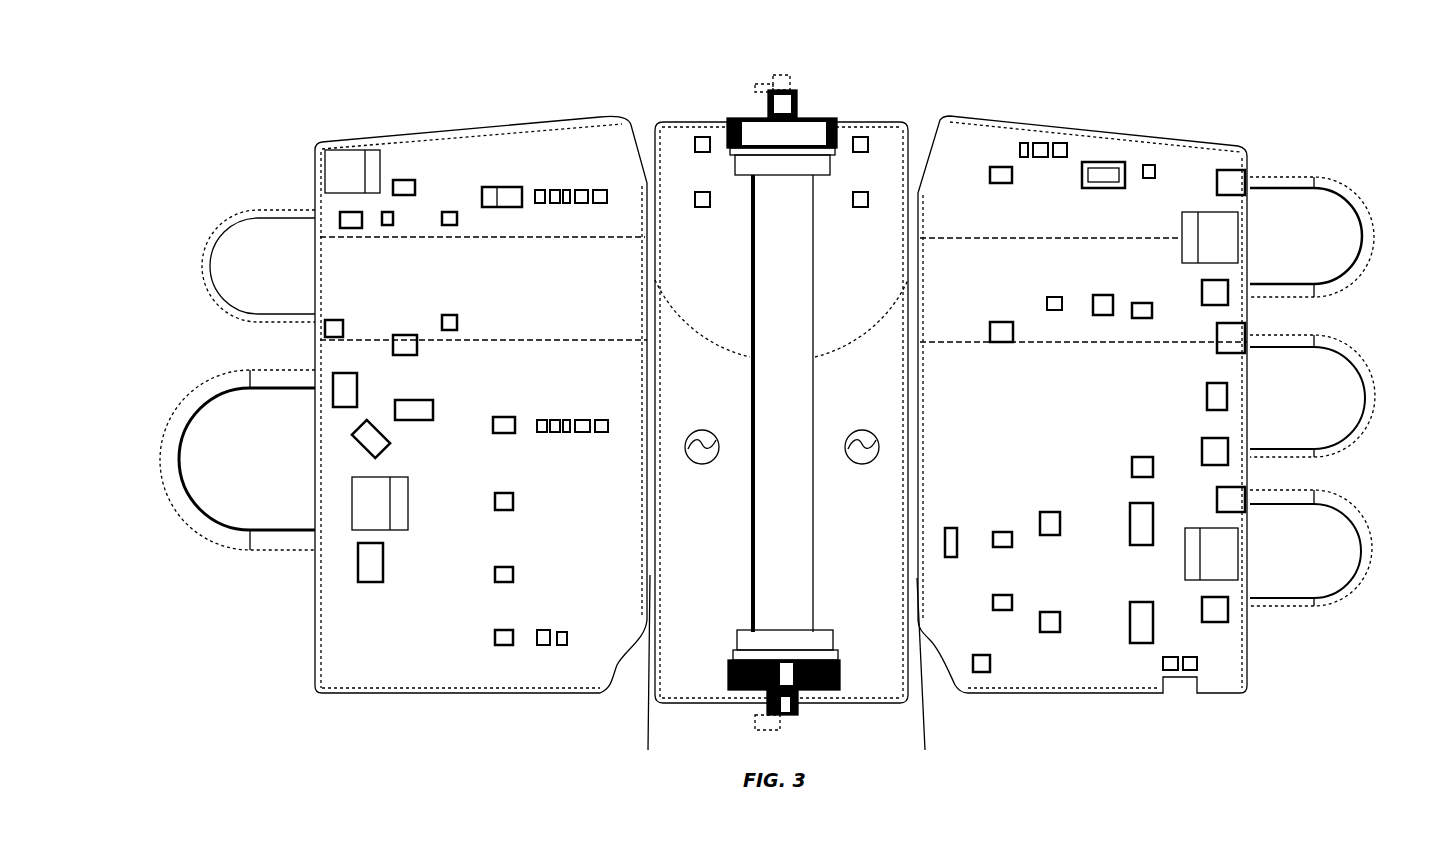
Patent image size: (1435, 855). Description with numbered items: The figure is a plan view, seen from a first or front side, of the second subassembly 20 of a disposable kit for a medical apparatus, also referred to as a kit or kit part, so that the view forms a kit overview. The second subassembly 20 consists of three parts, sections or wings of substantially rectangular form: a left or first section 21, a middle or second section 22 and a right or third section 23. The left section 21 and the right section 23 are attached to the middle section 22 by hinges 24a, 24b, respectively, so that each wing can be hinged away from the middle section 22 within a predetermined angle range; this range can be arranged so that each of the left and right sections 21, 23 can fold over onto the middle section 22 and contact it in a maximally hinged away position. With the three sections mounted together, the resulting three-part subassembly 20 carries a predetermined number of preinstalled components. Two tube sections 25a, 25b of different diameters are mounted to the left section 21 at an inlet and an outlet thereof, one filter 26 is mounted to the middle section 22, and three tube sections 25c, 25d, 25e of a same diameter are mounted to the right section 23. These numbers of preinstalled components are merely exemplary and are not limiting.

The second subassembly 20 is at (1048, 76).
The left section 21 is at (425, 128).
The middle section 22 is at (847, 118).
The right section 23 is at (1137, 128).
The hinge 24a is at (651, 678).
The hinge 24b is at (930, 680).
The tube section 25a is at (232, 220).
The tube section 25b is at (232, 378).
The tube section 25c is at (1292, 180).
The tube section 25d is at (1292, 337).
The tube section 25e is at (1288, 495).
The filter 26 is at (767, 240).